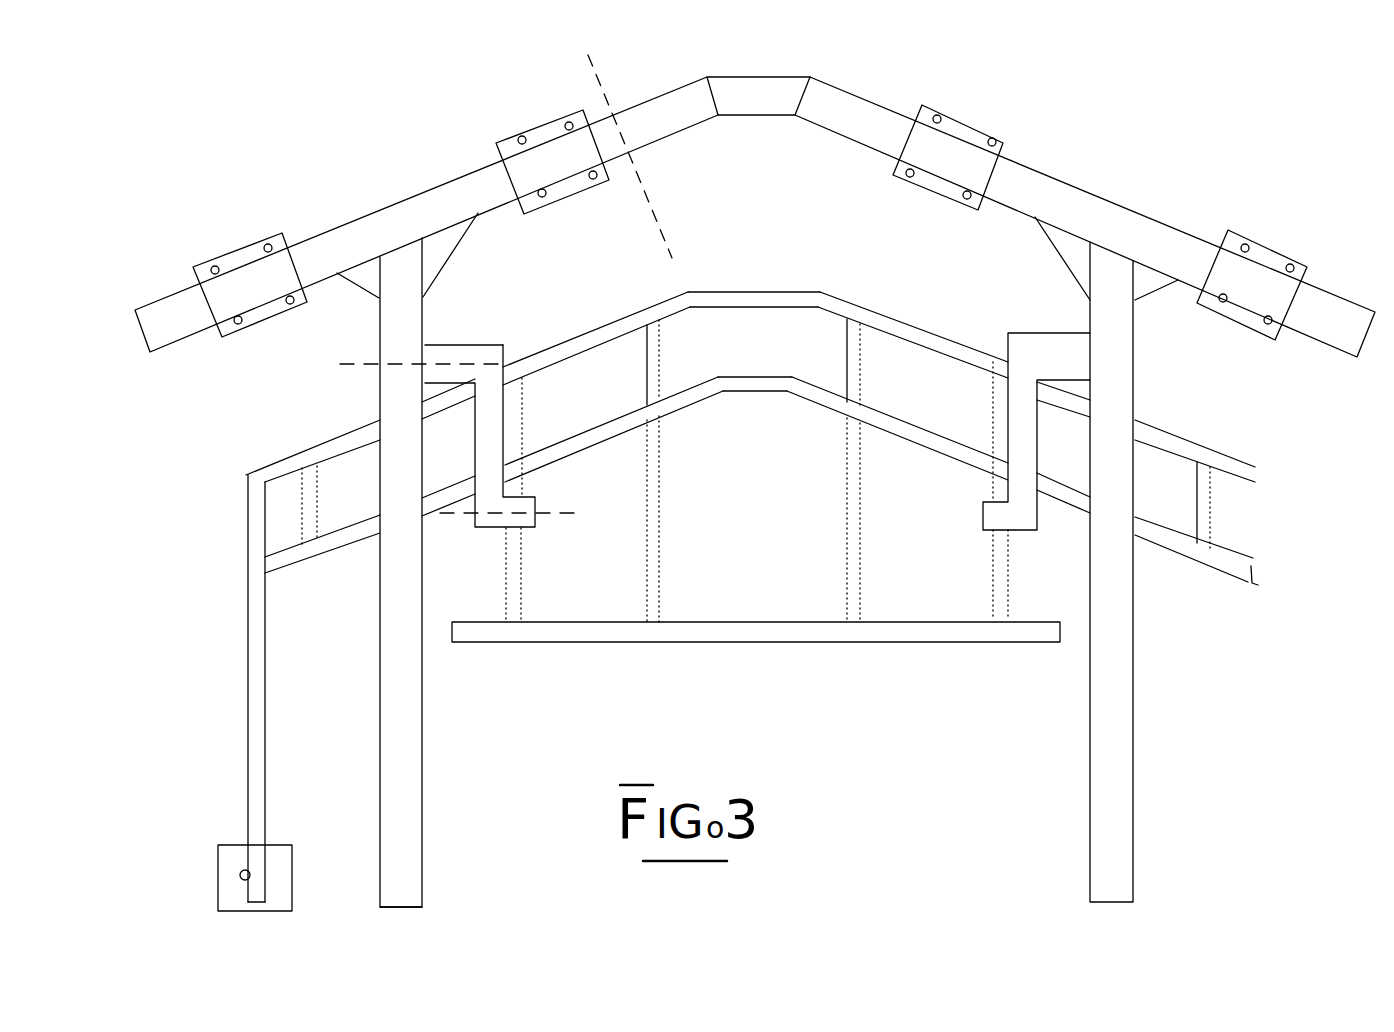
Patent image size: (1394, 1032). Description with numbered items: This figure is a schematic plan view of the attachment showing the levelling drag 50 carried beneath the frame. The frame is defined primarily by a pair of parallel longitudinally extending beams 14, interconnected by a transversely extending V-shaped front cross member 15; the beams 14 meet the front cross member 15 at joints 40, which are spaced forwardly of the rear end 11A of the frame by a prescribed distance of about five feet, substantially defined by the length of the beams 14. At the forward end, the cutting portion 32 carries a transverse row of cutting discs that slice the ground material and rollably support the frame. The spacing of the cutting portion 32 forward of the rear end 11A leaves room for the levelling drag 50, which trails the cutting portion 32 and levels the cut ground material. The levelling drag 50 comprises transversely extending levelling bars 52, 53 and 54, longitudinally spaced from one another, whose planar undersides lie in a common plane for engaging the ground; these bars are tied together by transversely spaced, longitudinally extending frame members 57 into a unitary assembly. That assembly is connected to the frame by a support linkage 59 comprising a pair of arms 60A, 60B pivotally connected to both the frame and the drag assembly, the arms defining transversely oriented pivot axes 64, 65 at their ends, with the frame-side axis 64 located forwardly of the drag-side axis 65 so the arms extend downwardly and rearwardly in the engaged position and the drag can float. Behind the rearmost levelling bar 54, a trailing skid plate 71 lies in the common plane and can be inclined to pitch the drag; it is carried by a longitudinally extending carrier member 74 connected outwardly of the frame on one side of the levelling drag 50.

The rear end 11A is at (408, 908).
The beams 14 is at (423, 735).
The front cross member 15 is at (655, 97).
The cutting portion 32 is at (117, 337).
The joints 40 is at (405, 210).
The levelling drag 50 is at (730, 290).
The levelling bar 52 is at (603, 326).
The levelling bar 53 is at (580, 432).
The levelling bar 54 is at (607, 645).
The frame members 57 is at (320, 518).
The support linkage 59 is at (457, 342).
The arm 60A is at (494, 345).
The arm 60B is at (1030, 331).
The pivot axis 64 is at (360, 363).
The pivot axis 65 is at (443, 517).
The skid plate 71 is at (225, 843).
The carrier member 74 is at (248, 705).